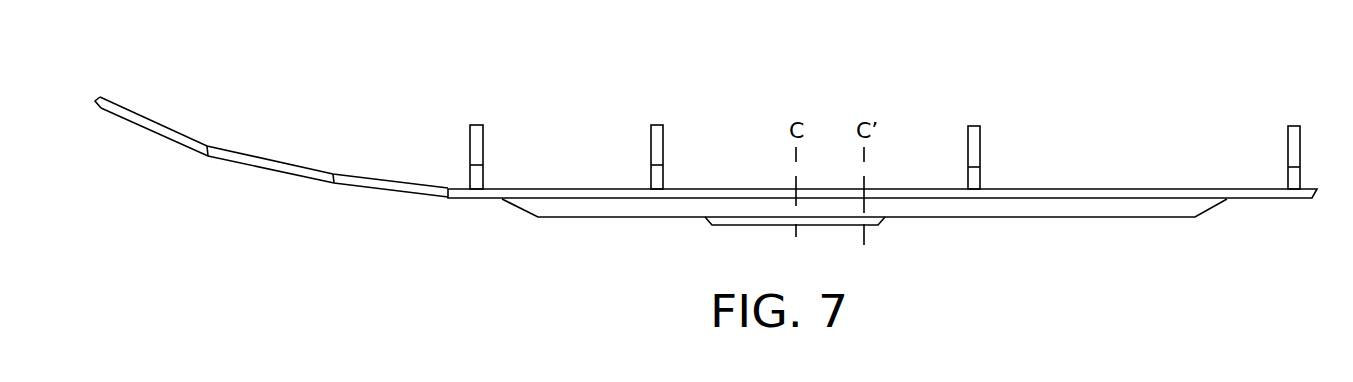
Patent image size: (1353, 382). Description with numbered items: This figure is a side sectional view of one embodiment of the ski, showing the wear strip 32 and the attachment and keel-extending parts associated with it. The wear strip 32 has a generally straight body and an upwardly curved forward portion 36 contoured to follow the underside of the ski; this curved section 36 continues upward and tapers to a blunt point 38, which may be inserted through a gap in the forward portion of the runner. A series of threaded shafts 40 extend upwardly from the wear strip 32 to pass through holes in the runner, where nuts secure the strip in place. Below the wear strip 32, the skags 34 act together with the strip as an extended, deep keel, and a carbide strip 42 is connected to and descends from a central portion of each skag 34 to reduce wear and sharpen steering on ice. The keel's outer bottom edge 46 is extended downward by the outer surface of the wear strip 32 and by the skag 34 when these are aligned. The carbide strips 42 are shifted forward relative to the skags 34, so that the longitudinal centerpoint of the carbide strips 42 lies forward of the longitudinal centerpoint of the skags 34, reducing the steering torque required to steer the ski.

The wear strip 32 is at (533, 190).
The skag 34 is at (1080, 210).
The upwardly curved forward portion 36 is at (242, 158).
The blunt point 38 is at (103, 97).
The threaded shaft 40 is at (477, 128).
The carbide strip 42 is at (1294, 130).
The outer bottom edge of keel 46 is at (657, 128).